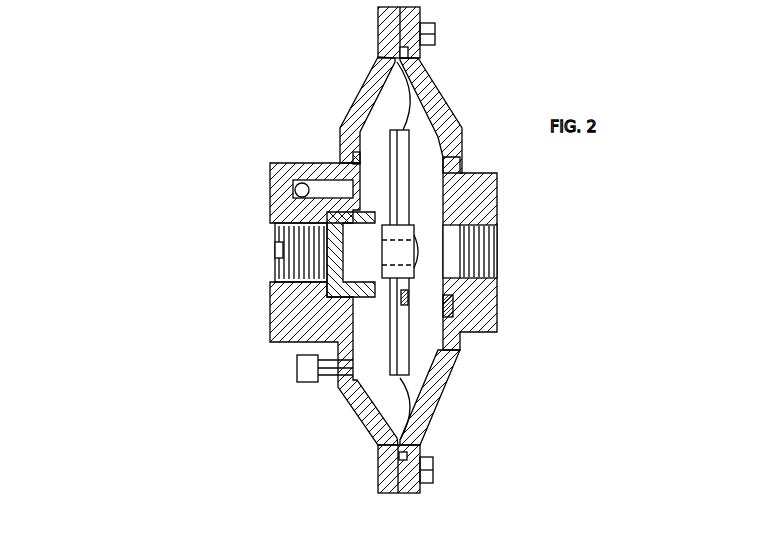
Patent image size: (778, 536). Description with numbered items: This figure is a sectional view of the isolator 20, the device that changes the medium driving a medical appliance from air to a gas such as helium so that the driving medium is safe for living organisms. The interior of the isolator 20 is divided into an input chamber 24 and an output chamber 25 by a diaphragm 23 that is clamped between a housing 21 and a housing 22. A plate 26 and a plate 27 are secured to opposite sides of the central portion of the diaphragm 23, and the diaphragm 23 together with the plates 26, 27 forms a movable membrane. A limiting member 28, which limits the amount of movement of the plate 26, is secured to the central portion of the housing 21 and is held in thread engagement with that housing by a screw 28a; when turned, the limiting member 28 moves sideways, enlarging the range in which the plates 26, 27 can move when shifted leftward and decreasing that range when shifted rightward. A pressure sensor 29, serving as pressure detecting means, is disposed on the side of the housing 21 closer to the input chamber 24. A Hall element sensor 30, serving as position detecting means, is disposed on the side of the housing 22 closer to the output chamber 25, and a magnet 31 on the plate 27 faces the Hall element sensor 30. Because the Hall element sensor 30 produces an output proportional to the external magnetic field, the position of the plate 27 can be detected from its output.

The isolator 20 is at (454, 80).
The housing 21 is at (270, 318).
The housing 22 is at (498, 203).
The diaphragm 23 is at (412, 398).
The input chamber 24 is at (380, 112).
The output chamber 25 is at (430, 128).
The plate 26 is at (387, 158).
The plate 27 is at (413, 175).
The limiting member 28 is at (382, 293).
The screw 28a is at (292, 238).
The pressure sensor 29 is at (313, 383).
The Hall element sensor 30 is at (453, 307).
The magnet 31 is at (410, 303).